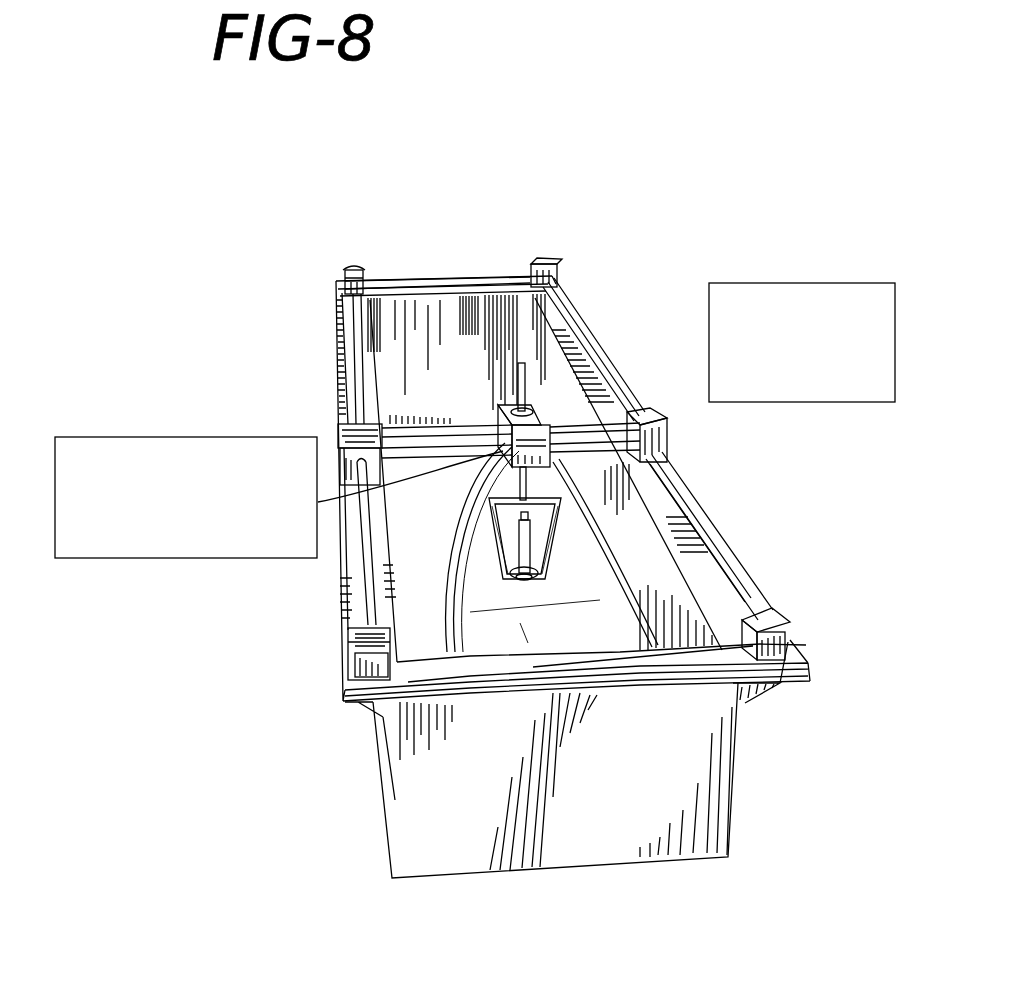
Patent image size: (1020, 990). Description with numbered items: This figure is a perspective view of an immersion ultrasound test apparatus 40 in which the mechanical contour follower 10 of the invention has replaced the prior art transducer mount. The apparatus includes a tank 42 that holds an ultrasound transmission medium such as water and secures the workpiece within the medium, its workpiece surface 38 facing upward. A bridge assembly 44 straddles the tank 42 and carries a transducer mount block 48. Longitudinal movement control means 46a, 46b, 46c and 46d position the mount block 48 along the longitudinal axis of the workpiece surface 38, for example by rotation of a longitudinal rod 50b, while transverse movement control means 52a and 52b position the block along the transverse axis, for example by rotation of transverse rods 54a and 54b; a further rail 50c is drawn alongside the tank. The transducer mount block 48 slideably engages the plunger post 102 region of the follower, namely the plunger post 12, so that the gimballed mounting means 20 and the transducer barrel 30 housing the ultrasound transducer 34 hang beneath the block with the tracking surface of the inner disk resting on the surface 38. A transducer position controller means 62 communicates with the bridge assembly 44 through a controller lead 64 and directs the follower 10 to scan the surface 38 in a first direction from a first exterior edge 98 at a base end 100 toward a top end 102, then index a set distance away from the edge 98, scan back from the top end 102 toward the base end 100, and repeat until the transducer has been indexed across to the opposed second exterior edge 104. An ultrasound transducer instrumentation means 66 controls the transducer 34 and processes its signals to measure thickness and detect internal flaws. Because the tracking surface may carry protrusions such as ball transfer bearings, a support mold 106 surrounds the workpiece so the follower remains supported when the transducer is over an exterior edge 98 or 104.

The mechanical contour follower 10 is at (630, 513).
The plunger post 12 is at (530, 486).
The gimballed mounting means 20 is at (490, 585).
The transducer barrel 30 is at (520, 580).
The ultrasound transducer 34 is at (500, 538).
The workpiece surface 38 is at (508, 648).
The immersion ultrasound test apparatus 40 is at (686, 242).
The tank 42 is at (694, 762).
The bridge assembly 44 is at (398, 382).
The longitudinal movement control means 46a is at (354, 650).
The longitudinal movement control means 46b is at (773, 612).
The longitudinal movement control means 46c is at (545, 262).
The longitudinal movement control means 46d is at (352, 268).
The transducer mount block 48 is at (510, 405).
The longitudinal rod 50b is at (742, 572).
The side rail 50c is at (360, 566).
The transverse movement control means 52a is at (350, 433).
The transverse movement control means 52b is at (627, 410).
The transverse rod 54a is at (561, 402).
The transverse rod 54b is at (560, 558).
The transducer position controller means 62 is at (884, 283).
The controller lead 64 is at (709, 366).
The ultrasound transducer instrumentation means 66 is at (150, 558).
The first exterior edge 98 is at (595, 600).
The base end 100 is at (600, 641).
The top end 102 is at (481, 396).
The second exterior edge 104 is at (357, 621).
The support mold 106 is at (455, 505).